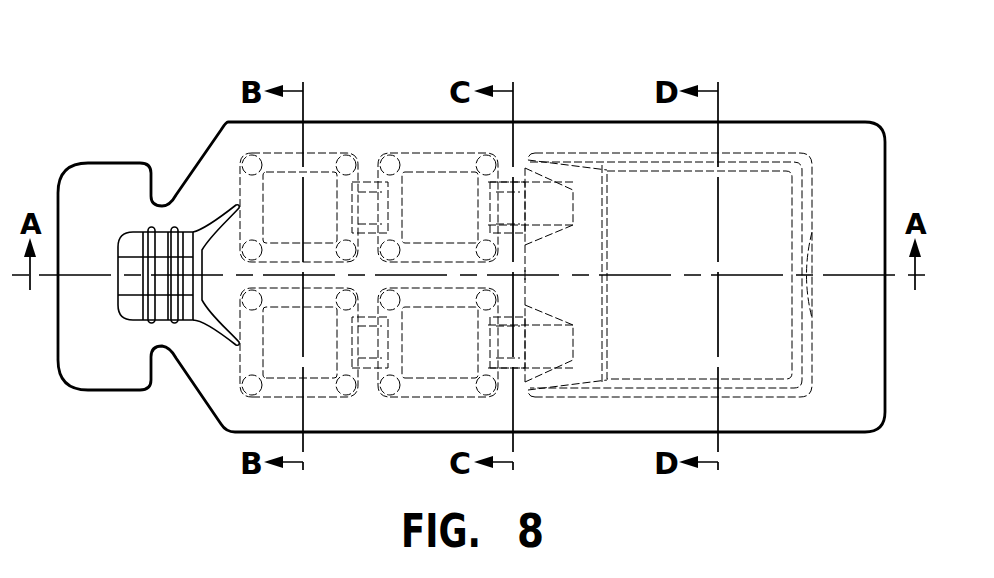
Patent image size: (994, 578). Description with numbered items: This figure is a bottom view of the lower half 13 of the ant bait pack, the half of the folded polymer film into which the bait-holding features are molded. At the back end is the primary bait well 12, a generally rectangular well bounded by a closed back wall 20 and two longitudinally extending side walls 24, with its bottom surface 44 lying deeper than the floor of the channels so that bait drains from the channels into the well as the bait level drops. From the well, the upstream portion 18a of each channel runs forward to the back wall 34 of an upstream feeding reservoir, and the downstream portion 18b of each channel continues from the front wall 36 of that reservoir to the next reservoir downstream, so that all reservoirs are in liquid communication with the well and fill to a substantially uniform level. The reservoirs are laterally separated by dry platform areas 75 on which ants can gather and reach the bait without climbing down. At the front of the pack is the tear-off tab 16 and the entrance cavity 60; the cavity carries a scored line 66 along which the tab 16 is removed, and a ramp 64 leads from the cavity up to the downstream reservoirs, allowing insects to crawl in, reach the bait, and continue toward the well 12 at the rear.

The primary bait well 12 is at (772, 377).
The lower half 13 is at (862, 102).
The tear-off tab 16 is at (145, 322).
The upstream portion of channel 18a is at (535, 197).
The downstream portion of channel 18b is at (368, 197).
The closed back wall 20 is at (808, 217).
The side walls 24 is at (767, 150).
The back wall of feeding reservoir 34 is at (488, 167).
The front wall of feeding reservoir 36 is at (398, 377).
The bottom surface of bait well 44 is at (681, 247).
The entrance cavity 60 is at (186, 228).
The ramp 64 is at (223, 233).
The scored line 66 is at (163, 350).
The dry platform areas 75 is at (483, 283).